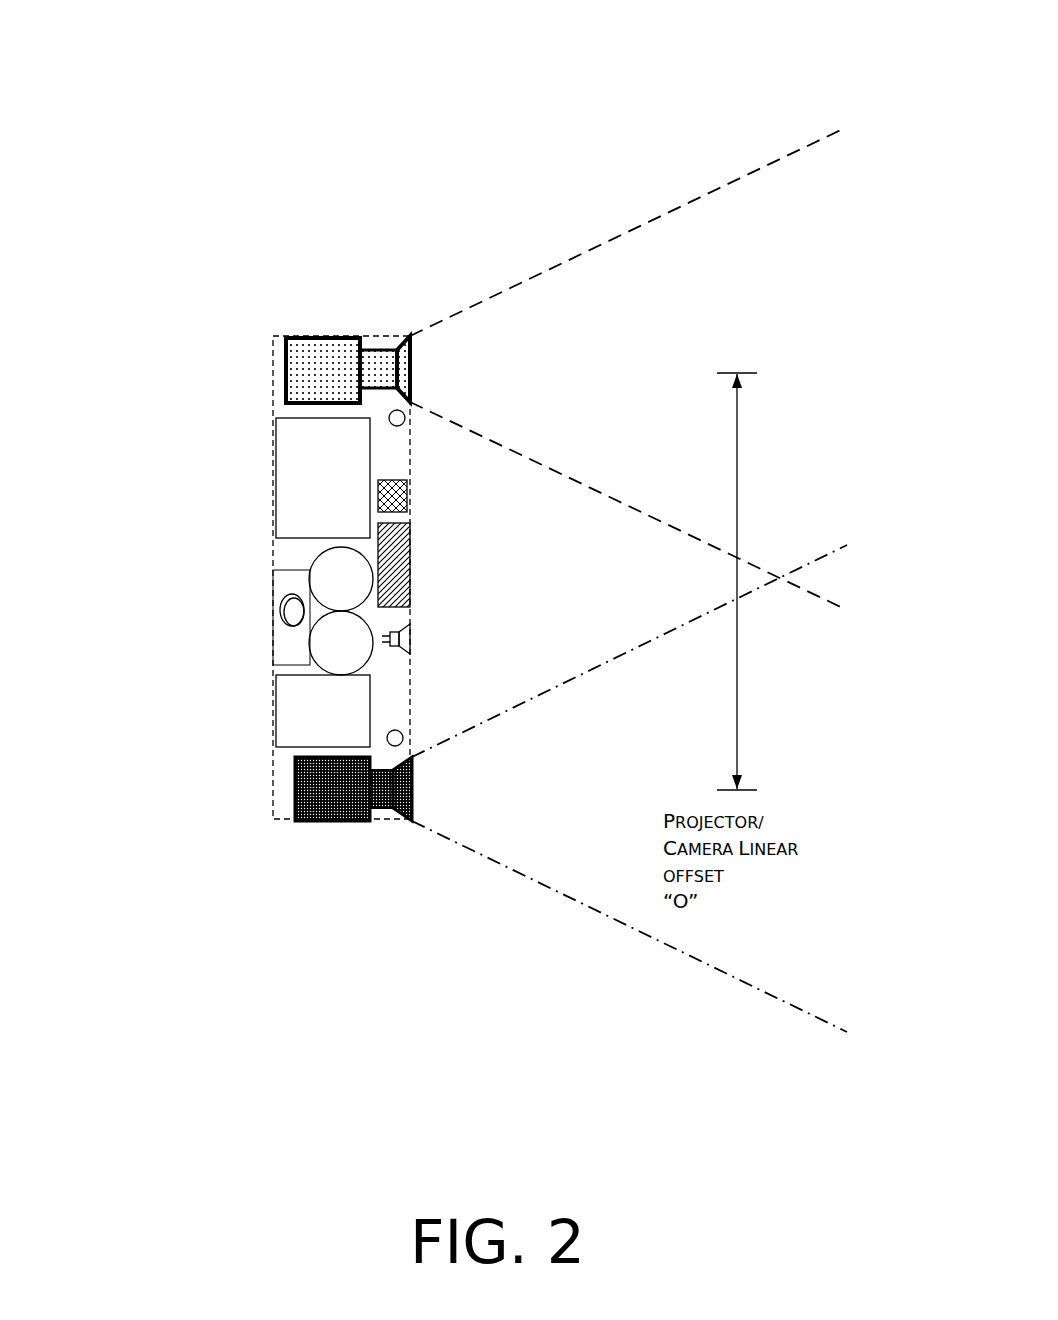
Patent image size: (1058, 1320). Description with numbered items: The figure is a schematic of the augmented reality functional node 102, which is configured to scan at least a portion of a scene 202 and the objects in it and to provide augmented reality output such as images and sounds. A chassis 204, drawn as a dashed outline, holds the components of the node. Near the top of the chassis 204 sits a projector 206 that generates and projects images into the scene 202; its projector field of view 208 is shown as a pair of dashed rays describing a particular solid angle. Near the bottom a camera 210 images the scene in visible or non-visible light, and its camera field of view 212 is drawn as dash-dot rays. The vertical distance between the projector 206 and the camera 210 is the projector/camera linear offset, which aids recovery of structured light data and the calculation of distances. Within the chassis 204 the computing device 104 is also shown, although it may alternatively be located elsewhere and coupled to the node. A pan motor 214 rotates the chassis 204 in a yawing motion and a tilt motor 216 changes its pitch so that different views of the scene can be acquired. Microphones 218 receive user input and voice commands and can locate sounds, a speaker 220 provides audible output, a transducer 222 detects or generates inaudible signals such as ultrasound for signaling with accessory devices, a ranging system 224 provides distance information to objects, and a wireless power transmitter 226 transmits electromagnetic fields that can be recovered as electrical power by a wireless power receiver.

The augmented reality functional node 102 is at (305, 336).
The computing device 104 is at (323, 480).
The scene 202 is at (886, 579).
The chassis 204 is at (342, 338).
The projector 206 is at (322, 370).
The projector field of view 208 is at (633, 232).
The camera 210 is at (297, 817).
The camera field of view 212 is at (582, 905).
The pan motor 214 is at (318, 560).
The tilt motor 216 is at (310, 640).
The microphone 218 is at (405, 412).
The speaker 220 is at (410, 640).
The transducer 222 is at (410, 478).
The ranging system 224 is at (410, 556).
The wireless power transmitter 226 is at (278, 610).